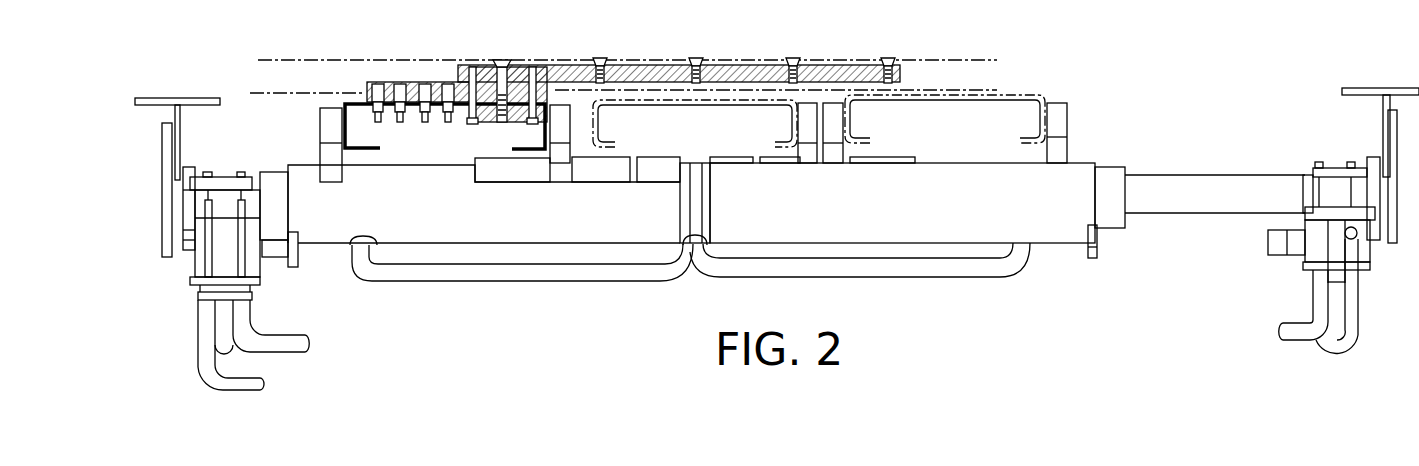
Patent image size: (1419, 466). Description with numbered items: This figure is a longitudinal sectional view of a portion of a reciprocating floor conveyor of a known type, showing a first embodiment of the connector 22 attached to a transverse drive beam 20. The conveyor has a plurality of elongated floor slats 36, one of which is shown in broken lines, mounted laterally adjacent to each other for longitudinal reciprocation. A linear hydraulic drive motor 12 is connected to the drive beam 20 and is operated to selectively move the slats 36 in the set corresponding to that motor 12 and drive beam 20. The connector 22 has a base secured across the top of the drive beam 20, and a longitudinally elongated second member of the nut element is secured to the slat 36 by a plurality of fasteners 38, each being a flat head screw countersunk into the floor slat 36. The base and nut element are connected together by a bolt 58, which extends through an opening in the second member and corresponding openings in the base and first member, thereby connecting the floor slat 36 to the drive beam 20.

The linear hydraulic drive motor 12 is at (1111, 156).
The drive beam 20 is at (350, 105).
The connector 22 is at (363, 82).
The floor slat 36 is at (983, 52).
The fastener 38 is at (600, 57).
The bolt 58 is at (503, 65).